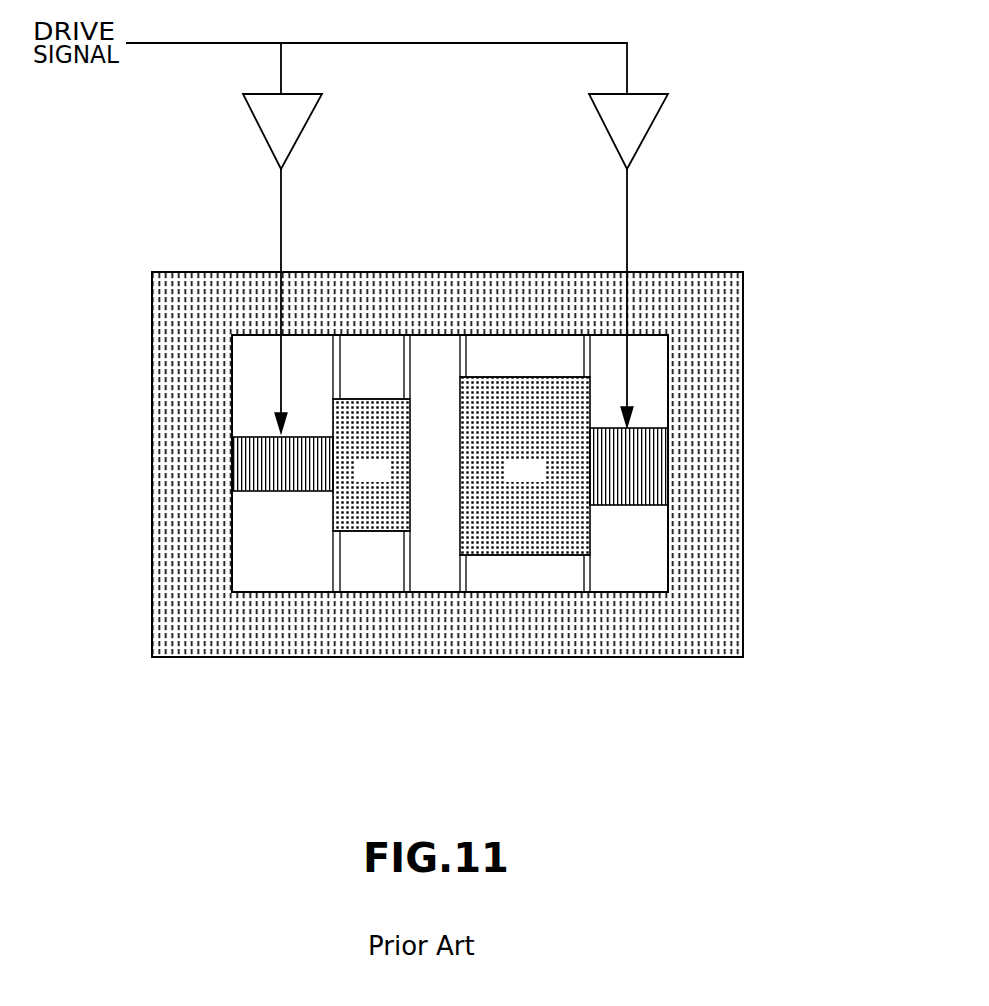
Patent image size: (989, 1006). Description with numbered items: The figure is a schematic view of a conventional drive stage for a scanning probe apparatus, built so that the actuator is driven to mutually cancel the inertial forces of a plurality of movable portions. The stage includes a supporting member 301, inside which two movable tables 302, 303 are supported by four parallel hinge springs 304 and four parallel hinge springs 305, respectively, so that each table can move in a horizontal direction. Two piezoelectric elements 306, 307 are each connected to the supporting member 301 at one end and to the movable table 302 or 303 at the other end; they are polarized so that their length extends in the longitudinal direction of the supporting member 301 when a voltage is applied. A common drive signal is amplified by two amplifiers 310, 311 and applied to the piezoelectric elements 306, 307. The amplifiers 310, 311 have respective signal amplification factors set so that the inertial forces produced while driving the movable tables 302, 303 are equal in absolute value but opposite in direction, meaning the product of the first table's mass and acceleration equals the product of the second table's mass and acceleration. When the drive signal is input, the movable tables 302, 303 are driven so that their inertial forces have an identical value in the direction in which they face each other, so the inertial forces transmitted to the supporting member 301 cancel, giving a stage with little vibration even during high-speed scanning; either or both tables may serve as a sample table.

The supporting member 301 is at (735, 348).
The movable table 302 is at (353, 502).
The movable table 303 is at (560, 515).
The parallel hinge springs 304 is at (409, 377).
The parallel hinge springs 305 is at (583, 353).
The piezoelectric element 306 is at (232, 465).
The piezoelectric element 307 is at (672, 462).
The amplifier 310 is at (300, 107).
The amplifier 311 is at (657, 117).